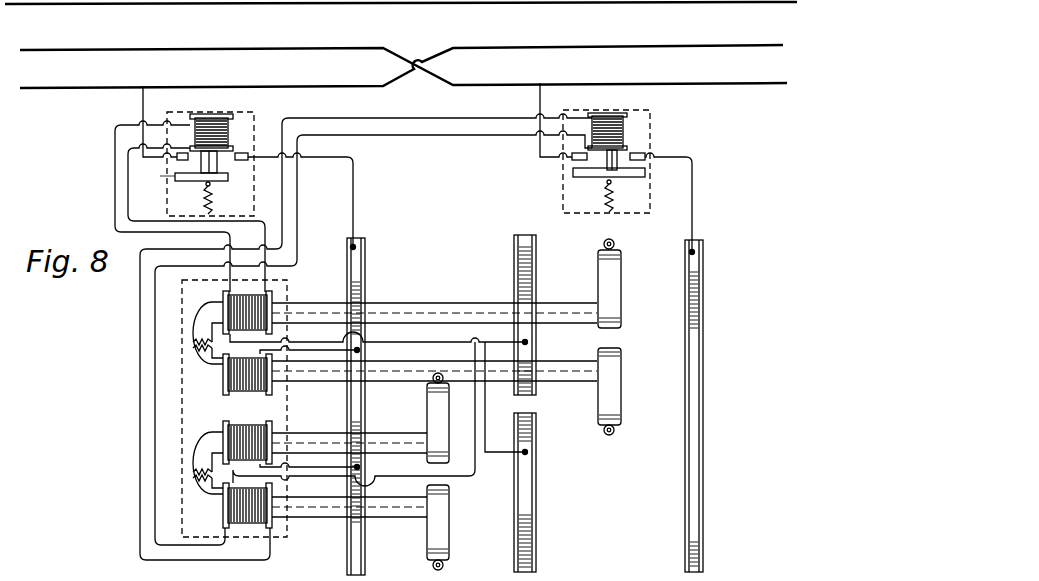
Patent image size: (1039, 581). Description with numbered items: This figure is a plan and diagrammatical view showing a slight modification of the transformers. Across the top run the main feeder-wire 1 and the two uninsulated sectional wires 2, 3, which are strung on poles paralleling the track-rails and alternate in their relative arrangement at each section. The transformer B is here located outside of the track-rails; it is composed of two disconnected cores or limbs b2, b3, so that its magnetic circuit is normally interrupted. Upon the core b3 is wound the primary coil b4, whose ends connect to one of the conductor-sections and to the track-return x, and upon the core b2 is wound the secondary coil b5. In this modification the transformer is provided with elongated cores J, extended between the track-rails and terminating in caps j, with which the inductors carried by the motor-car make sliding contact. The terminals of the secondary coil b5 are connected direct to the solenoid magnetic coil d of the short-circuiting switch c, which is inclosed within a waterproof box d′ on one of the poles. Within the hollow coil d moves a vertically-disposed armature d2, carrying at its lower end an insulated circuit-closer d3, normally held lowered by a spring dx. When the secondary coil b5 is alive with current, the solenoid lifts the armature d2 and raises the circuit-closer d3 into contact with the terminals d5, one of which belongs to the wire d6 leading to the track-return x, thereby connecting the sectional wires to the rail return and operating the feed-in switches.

The main feeder-wire 1 is at (401, 14).
The uninsulated sectional wire 2 is at (403, 60).
The uninsulated sectional wire 3 is at (401, 66).
The short-circuiting switch c is at (408, 154).
The solenoid magnetic coil d is at (229, 124).
The waterproof box d′ is at (575, 184).
The armature d2 is at (612, 165).
The circuit-closer d3 is at (177, 180).
The terminals d5 is at (257, 149).
The wire d6 is at (366, 176).
The spring dx is at (640, 221).
The rail / relay coil a is at (625, 131).
The transformer B is at (210, 383).
The core b2 is at (274, 306).
The core b3 is at (273, 425).
The primary coil b4 is at (262, 394).
The secondary coil b5 is at (280, 289).
The track-return x is at (379, 409).
The elongated cores J is at (429, 304).
The caps j is at (524, 404).